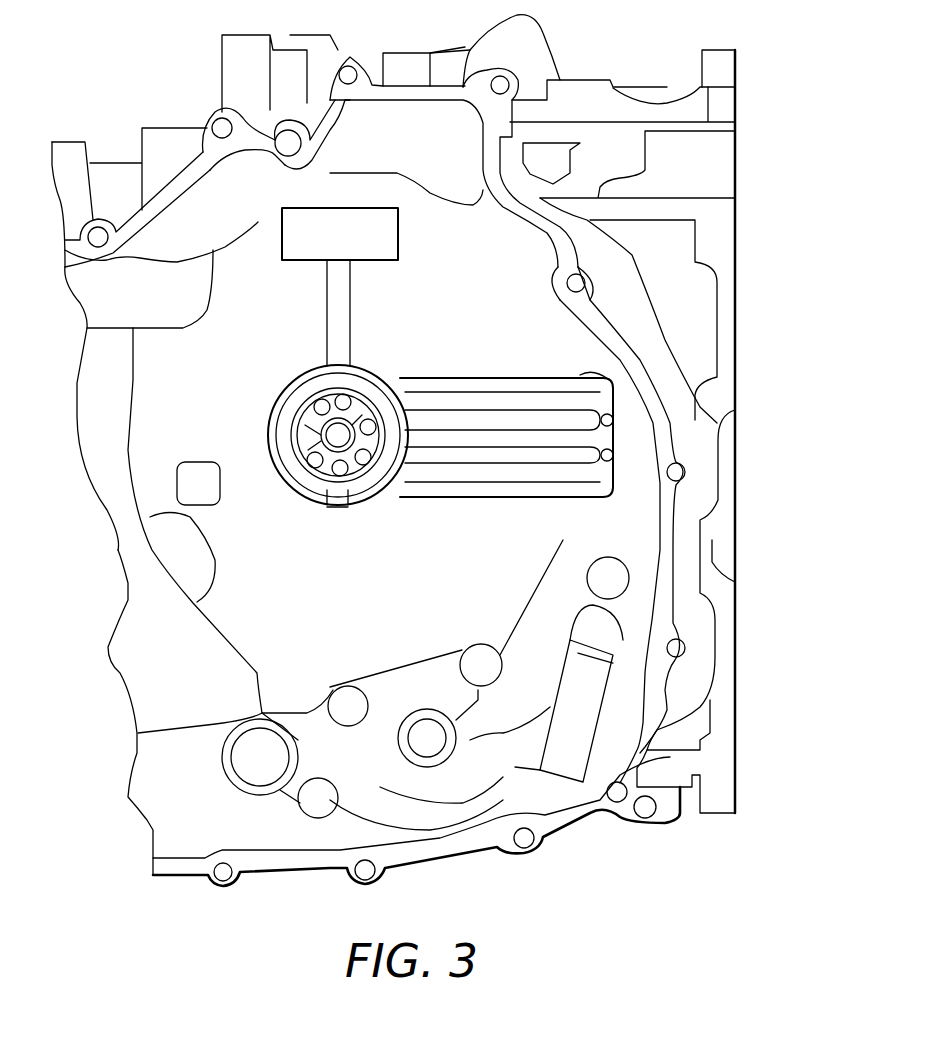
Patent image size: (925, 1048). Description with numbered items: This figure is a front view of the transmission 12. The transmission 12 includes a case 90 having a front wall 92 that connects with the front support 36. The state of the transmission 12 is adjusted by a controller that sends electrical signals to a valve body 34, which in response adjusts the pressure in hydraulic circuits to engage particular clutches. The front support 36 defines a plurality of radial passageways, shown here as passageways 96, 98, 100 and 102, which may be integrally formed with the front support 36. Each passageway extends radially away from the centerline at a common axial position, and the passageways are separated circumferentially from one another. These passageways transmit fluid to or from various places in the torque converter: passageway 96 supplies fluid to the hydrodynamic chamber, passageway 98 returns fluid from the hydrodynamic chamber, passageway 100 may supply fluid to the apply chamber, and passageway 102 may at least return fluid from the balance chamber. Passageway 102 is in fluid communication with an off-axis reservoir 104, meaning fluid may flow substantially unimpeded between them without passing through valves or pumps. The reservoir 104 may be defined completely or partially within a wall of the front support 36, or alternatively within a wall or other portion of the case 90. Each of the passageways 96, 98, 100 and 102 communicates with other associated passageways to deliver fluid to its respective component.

The transmission 12 is at (305, 287).
The valve body 34 is at (737, 145).
The front support 36 is at (296, 591).
The case 90 is at (535, 67).
The front wall 92 is at (396, 576).
The radial passageway 96 is at (495, 420).
The radial passageway 98 is at (515, 437).
The radial passageway 100 is at (470, 457).
The radial passageway 102 is at (327, 312).
The off-axis reservoir 104 is at (340, 234).